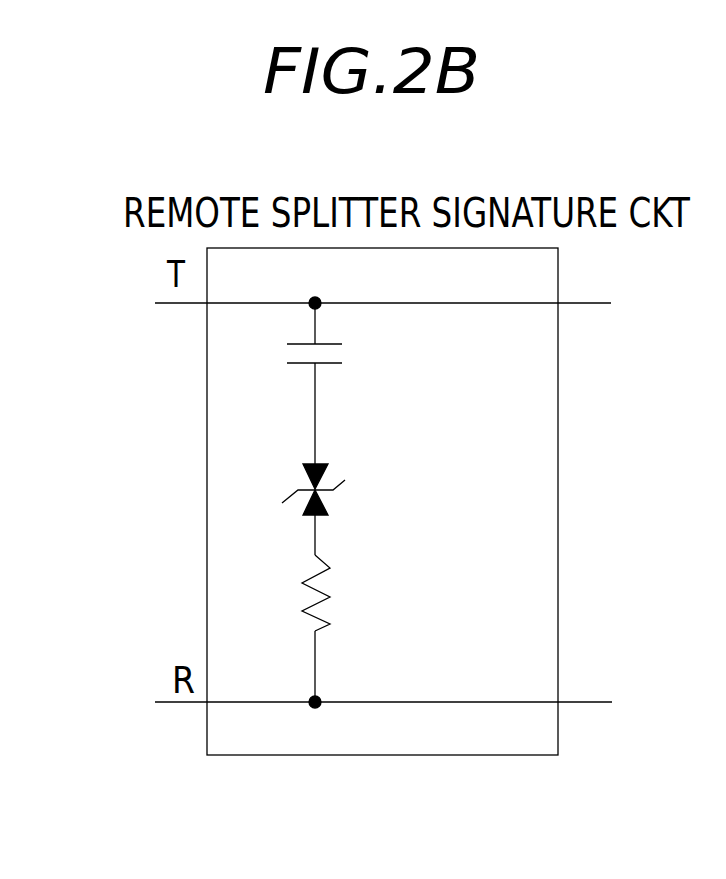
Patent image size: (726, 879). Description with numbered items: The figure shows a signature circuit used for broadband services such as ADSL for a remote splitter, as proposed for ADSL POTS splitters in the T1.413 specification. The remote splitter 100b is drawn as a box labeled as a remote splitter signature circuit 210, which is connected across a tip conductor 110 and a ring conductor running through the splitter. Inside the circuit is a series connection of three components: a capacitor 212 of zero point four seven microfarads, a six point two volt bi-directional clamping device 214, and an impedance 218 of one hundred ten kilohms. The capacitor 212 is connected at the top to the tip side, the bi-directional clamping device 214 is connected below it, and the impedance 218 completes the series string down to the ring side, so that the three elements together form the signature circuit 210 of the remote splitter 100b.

The remote splitter 100b is at (480, 755).
The tip conductor 110 is at (195, 305).
The remote splitter signature circuit 210 is at (390, 475).
The capacitor 212 is at (303, 365).
The bi-directional clamping device 214 is at (304, 470).
The impedance 218 is at (303, 582).